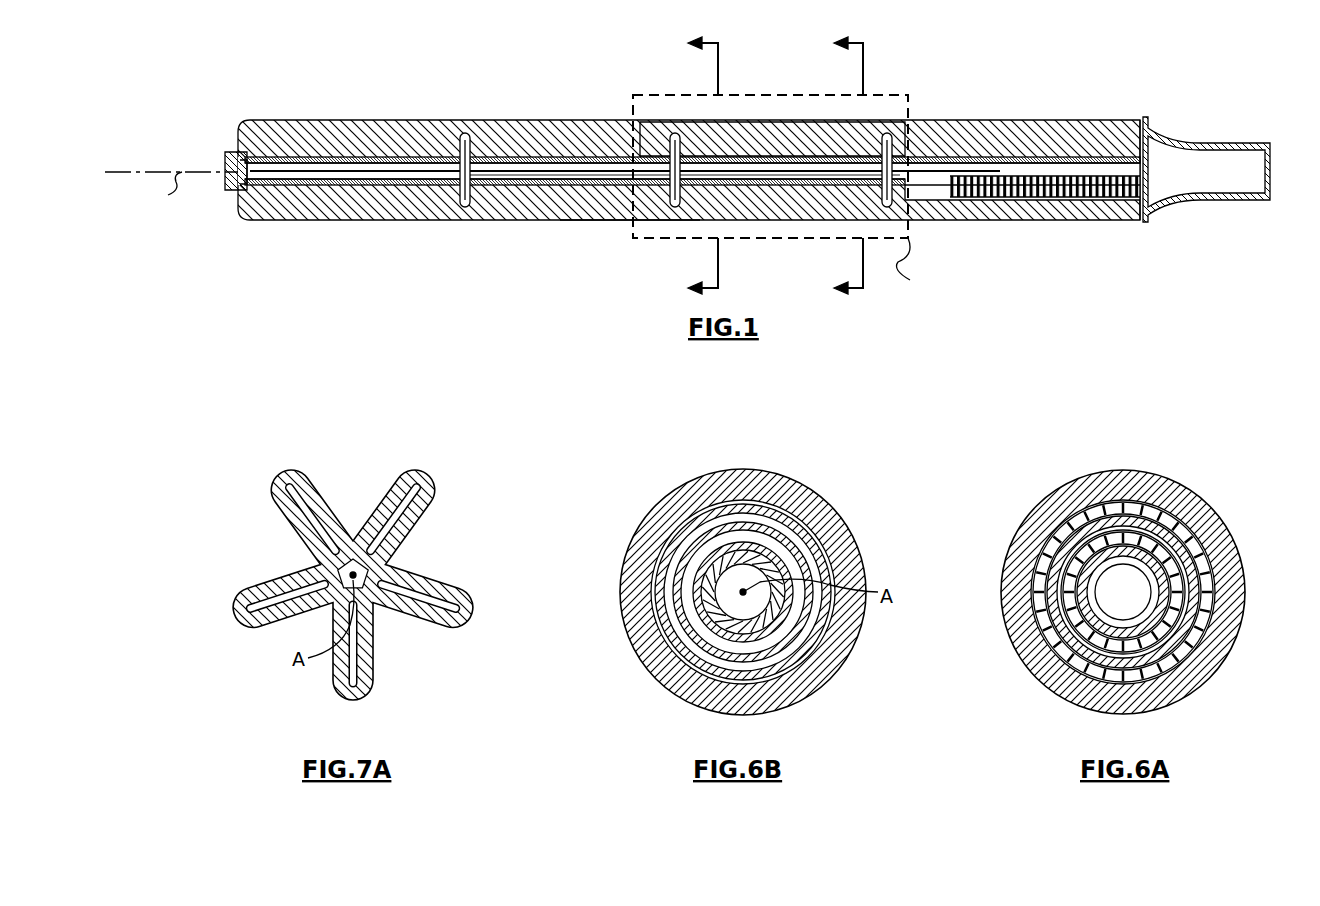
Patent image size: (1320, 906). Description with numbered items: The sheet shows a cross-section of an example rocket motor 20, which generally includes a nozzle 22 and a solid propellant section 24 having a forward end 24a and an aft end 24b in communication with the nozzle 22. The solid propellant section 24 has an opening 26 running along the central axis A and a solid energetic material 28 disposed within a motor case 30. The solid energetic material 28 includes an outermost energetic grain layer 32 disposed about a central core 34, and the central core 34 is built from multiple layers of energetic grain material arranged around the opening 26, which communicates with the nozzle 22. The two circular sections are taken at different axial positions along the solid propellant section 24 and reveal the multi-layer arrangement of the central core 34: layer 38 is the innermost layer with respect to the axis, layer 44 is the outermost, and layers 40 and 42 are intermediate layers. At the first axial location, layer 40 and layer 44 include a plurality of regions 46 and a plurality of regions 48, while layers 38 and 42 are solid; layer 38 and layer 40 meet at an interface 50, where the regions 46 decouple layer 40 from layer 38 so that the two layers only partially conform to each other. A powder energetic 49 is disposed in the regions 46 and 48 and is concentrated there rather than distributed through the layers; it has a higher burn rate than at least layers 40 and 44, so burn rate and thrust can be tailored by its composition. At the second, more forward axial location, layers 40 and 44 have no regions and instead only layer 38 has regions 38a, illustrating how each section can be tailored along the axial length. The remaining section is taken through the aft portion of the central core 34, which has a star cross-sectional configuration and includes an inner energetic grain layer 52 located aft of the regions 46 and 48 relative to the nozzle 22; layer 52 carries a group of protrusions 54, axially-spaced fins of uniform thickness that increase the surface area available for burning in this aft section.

In FIG. 1, the rocket motor 20 is at (418, 243).
In FIG. 1, the nozzle 22 is at (1172, 206).
In FIG. 1, the solid propellant section 24 is at (645, 118).
In FIG. 1, the forward end 24a is at (265, 197).
In FIG. 1, the aft end 24b is at (1131, 204).
In FIG. 1, the opening 26 is at (873, 176).
In FIG. 1, the solid energetic material 28 is at (804, 146).
In FIG. 1, the motor case 30 is at (621, 220).
In FIG. 1, the outermost energetic grain layer 32 is at (565, 200).
In FIG. 6B, the outermost energetic grain layer 32 is at (838, 655).
In FIG. 6A, the outermost energetic grain layer 32 is at (1202, 675).
In FIG. 1, the central core 34 is at (789, 184).
In FIG. 6B, the innermost energetic grain layer 38 is at (748, 558).
In FIG. 6A, the innermost energetic grain layer 38 is at (1100, 610).
In FIG. 6B, the regions 38a is at (703, 545).
In FIG. 6B, the intermediate energetic grain layer 40 is at (770, 545).
In FIG. 6A, the intermediate energetic grain layer 40 is at (1188, 498).
In FIG. 6B, the intermediate energetic grain layer 42 is at (800, 548).
In FIG. 6A, the intermediate energetic grain layer 42 is at (1240, 568).
In FIG. 6B, the outermost energetic grain layer 44 is at (812, 560).
In FIG. 6A, the outermost energetic grain layer 44 is at (1210, 620).
In FIG. 6A, the regions 46 is at (1144, 526).
In FIG. 6A, the regions 48 is at (1096, 496).
In FIG. 6B, the powder energetic 49 is at (703, 596).
In FIG. 6A, the powder energetic 49 is at (1032, 600).
In FIG. 1, the interface 50 is at (937, 186).
In FIG. 7A, the inner energetic grain layer 52 is at (422, 527).
In FIG. 7A, the protrusions 54 is at (400, 492).